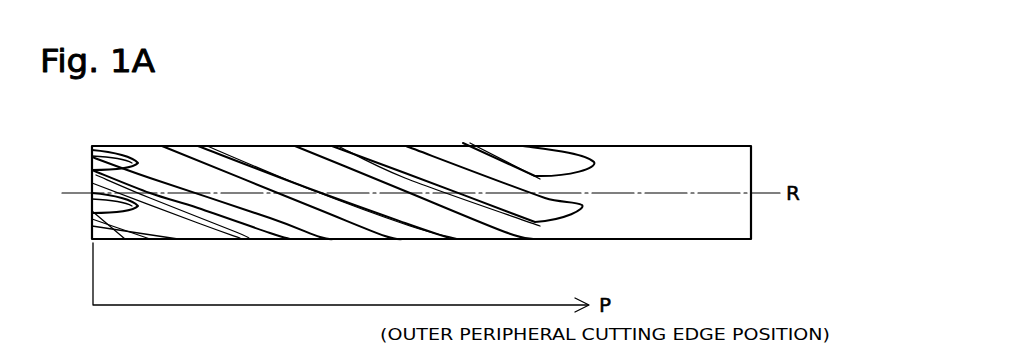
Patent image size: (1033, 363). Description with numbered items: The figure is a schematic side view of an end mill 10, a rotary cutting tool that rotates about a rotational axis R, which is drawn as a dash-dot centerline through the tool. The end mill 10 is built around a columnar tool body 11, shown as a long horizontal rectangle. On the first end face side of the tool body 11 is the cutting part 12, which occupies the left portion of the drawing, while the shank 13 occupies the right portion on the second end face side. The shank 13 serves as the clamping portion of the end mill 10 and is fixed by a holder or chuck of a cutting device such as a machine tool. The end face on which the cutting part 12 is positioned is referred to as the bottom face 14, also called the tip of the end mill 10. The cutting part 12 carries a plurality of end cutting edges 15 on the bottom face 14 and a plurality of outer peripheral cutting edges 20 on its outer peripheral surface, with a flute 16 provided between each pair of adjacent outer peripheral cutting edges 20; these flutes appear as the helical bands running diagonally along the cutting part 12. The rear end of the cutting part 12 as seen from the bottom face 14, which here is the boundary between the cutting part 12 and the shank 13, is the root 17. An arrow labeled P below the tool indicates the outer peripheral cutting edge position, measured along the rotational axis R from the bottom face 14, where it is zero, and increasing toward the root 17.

The end mill 10 is at (771, 170).
The tool body 11 is at (523, 146).
The cutting part 12 is at (363, 146).
The shank 13 is at (660, 150).
The bottom face 14 is at (83, 197).
The end cutting edges 15 is at (92, 156).
The flute 16 is at (256, 150).
The root 17 is at (598, 197).
The outer peripheral cutting edges 20 is at (204, 208).